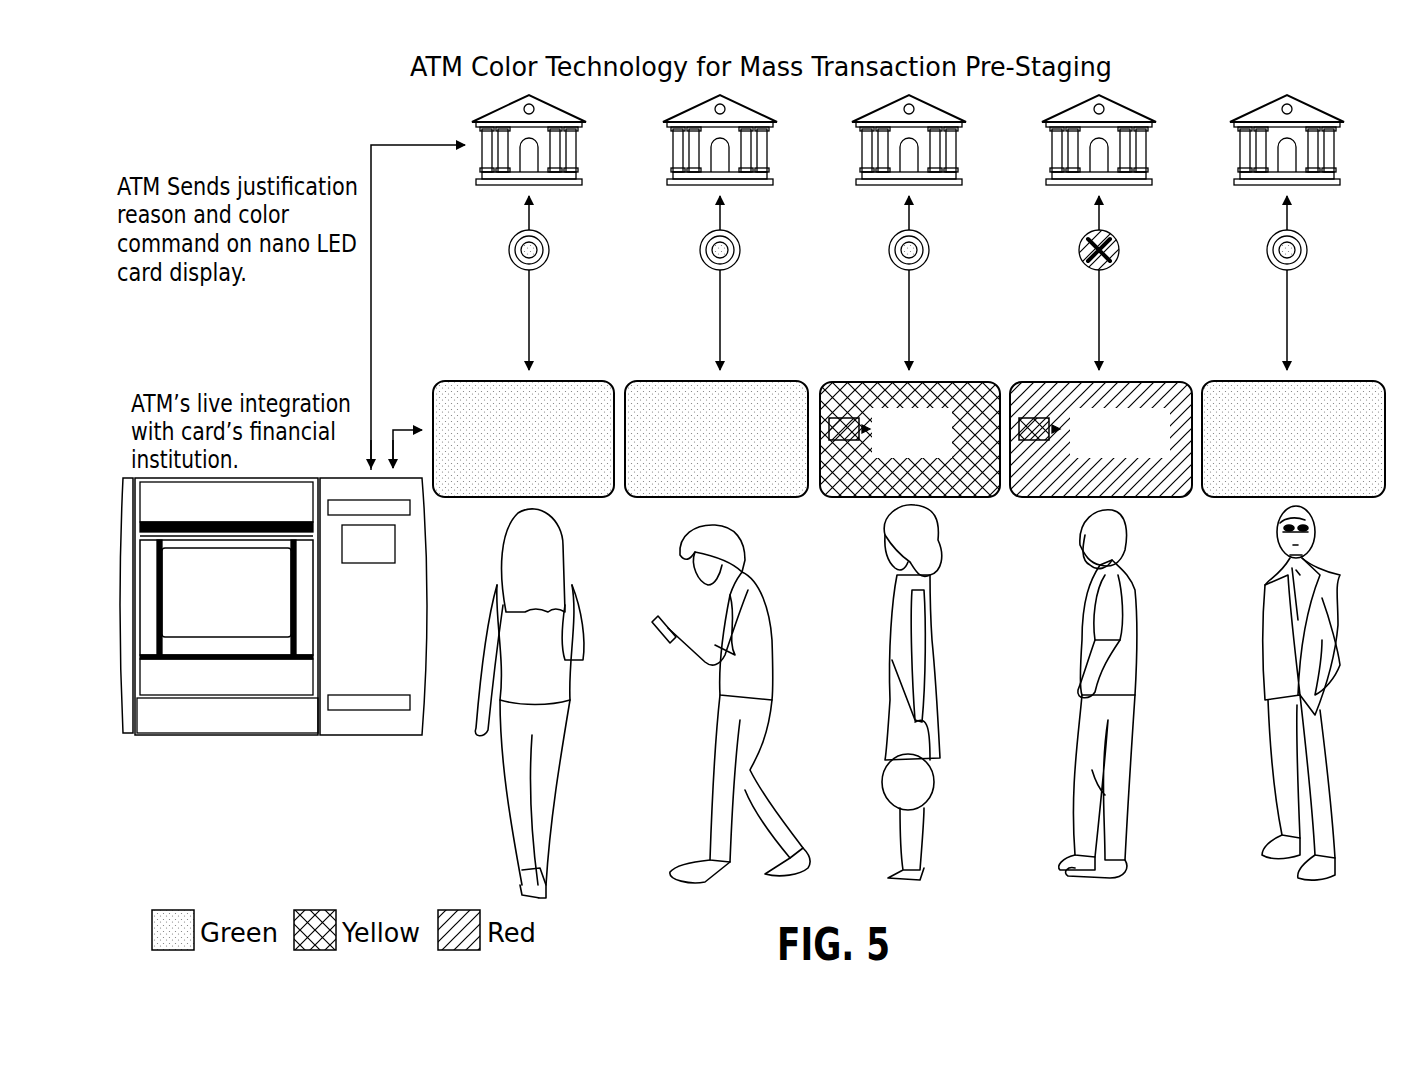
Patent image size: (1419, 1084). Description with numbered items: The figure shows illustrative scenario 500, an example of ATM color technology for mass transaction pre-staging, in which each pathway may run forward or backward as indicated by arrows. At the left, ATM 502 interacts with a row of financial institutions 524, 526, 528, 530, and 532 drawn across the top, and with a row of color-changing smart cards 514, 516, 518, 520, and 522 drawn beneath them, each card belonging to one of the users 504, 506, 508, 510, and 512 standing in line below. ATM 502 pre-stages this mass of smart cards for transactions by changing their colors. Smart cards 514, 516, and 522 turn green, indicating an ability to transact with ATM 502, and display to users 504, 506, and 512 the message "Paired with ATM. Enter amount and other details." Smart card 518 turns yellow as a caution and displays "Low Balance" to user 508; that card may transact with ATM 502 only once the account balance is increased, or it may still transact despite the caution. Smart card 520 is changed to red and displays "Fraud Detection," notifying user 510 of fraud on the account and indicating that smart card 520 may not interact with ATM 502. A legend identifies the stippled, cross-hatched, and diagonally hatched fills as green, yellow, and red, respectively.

The illustrative scenario 500 is at (220, 58).
The ATM 502 is at (163, 735).
The user 504 is at (556, 519).
The user 506 is at (745, 548).
The user 508 is at (933, 530).
The user 510 is at (1130, 530).
The user 512 is at (1315, 525).
The smart card 514 is at (562, 381).
The smart card 516 is at (752, 381).
The smart card 518 is at (942, 381).
The smart card 520 is at (1132, 381).
The smart card 522 is at (1320, 381).
The financial institution 524 is at (572, 153).
The financial institution 526 is at (762, 153).
The financial institution 528 is at (952, 153).
The financial institution 530 is at (1141, 153).
The financial institution 532 is at (1331, 153).